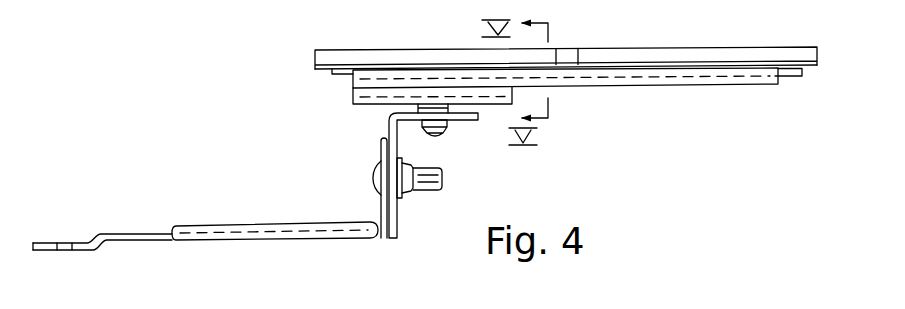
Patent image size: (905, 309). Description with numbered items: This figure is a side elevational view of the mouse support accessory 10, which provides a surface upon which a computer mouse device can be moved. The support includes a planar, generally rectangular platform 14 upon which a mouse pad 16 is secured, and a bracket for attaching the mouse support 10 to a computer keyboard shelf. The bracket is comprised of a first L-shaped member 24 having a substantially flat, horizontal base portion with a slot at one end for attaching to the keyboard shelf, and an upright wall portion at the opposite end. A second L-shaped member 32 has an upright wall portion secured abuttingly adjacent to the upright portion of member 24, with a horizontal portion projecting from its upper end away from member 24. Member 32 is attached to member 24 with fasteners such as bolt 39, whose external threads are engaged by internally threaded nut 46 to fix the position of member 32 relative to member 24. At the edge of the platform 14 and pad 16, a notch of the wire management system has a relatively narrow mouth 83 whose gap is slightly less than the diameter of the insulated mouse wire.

The mouse support accessory 10 is at (677, 115).
The platform 14 is at (808, 66).
The mouse pad 16 is at (653, 52).
The first L-shaped member 24 is at (143, 238).
The second L-shaped member 32 is at (398, 215).
The bolt 39 is at (373, 180).
The nut 46 is at (415, 162).
The mouth 83 is at (576, 58).